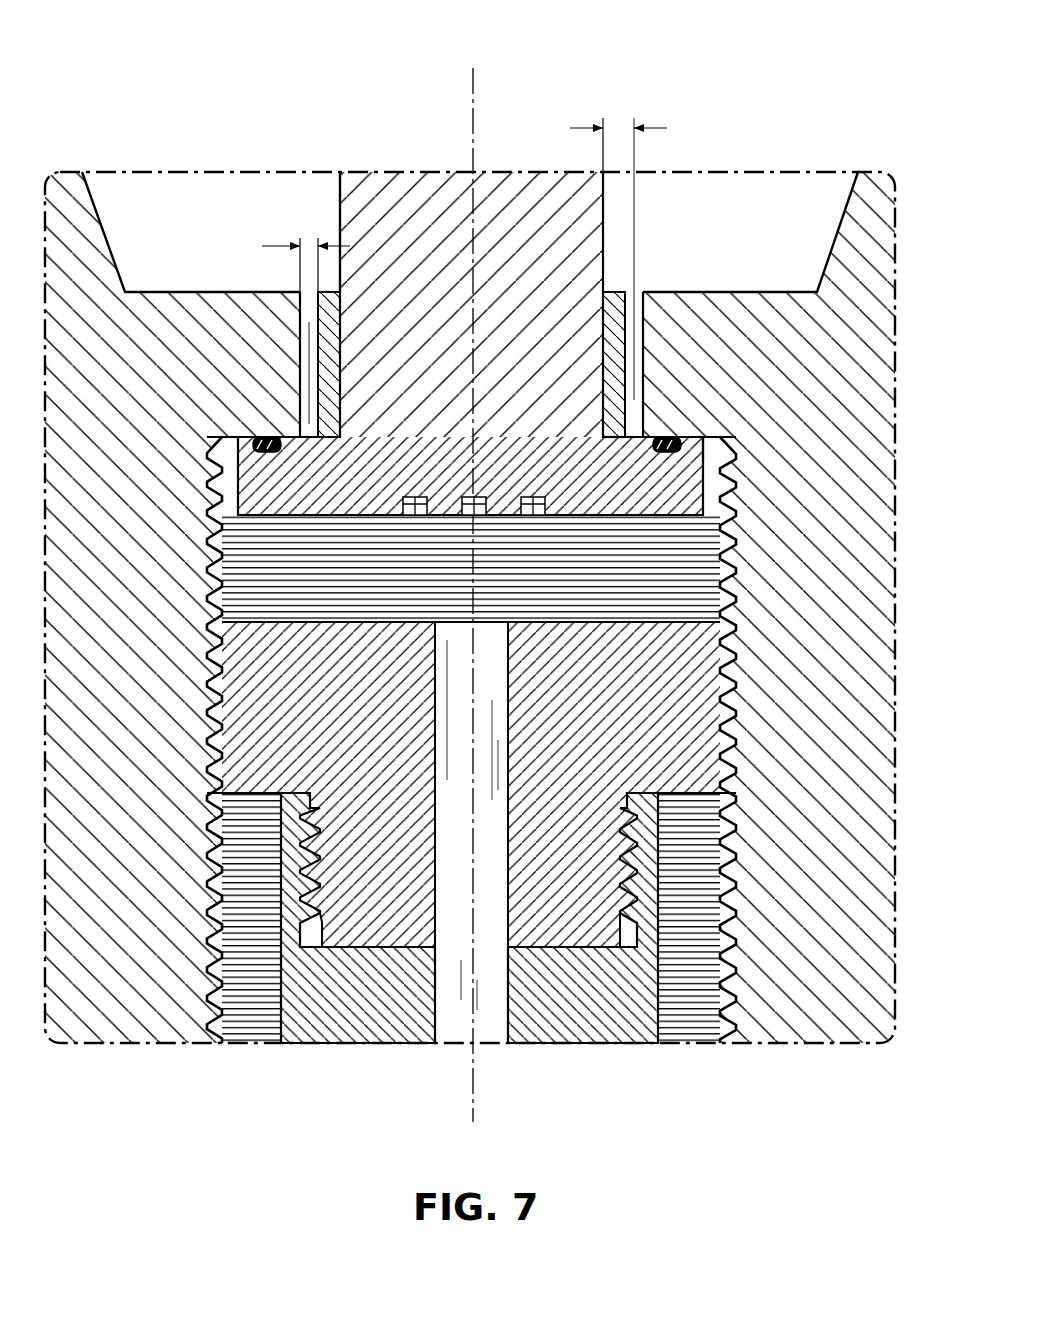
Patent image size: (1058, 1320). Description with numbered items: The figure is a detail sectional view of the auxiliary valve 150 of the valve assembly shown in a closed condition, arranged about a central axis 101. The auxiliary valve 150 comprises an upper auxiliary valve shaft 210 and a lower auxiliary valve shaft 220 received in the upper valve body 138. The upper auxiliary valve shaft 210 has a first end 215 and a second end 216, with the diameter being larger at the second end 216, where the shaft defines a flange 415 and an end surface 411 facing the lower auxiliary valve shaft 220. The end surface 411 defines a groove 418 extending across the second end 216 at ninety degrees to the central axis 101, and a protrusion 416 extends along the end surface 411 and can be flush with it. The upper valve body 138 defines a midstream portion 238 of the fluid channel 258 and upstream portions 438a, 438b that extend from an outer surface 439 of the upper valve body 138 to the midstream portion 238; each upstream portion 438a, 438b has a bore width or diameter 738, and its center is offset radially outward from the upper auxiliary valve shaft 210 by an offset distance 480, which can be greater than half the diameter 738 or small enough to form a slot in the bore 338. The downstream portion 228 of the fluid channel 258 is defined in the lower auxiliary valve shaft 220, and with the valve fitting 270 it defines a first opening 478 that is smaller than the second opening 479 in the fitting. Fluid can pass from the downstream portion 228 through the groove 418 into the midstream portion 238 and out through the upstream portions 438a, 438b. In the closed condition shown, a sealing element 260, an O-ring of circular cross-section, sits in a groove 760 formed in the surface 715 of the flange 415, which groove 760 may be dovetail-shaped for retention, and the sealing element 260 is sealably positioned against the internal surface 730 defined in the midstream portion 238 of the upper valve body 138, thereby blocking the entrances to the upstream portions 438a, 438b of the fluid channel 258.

The auxiliary valve 150 is at (500, 577).
The central axis 101 is at (475, 120).
The offset distance 480 is at (616, 125).
The outer surface 439 is at (190, 286).
The first end 215 is at (402, 180).
The upper auxiliary valve shaft 210 is at (530, 200).
The bore width or diameter 738 is at (308, 240).
The upstream portion 438a is at (305, 326).
The upstream portion 438b is at (636, 300).
The bore 338 is at (604, 374).
The groove 760 is at (660, 437).
The sealing element 260 is at (265, 436).
The surface 715 is at (694, 436).
The flange 415 is at (706, 442).
The groove 418 is at (408, 516).
The protrusion 416 is at (505, 530).
The end surface 411 is at (294, 534).
The second end 216 is at (313, 517).
The first end or opening 478 is at (492, 627).
The surface 730 is at (690, 446).
The midstream portion 238 is at (700, 590).
The lower auxiliary valve shaft 220 is at (500, 607).
The valve fitting 270 is at (735, 700).
The second end or opening 479 is at (420, 950).
The downstream portion 228 is at (511, 1040).
The fluid channel 258 is at (500, 1018).
The upper valve body 138 is at (90, 1025).